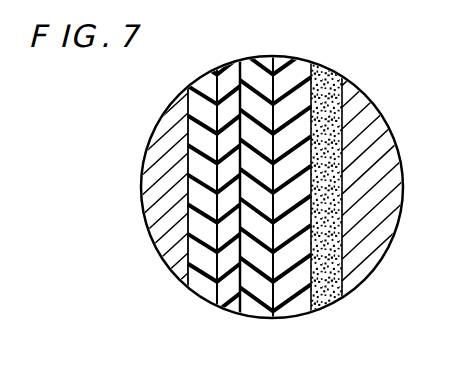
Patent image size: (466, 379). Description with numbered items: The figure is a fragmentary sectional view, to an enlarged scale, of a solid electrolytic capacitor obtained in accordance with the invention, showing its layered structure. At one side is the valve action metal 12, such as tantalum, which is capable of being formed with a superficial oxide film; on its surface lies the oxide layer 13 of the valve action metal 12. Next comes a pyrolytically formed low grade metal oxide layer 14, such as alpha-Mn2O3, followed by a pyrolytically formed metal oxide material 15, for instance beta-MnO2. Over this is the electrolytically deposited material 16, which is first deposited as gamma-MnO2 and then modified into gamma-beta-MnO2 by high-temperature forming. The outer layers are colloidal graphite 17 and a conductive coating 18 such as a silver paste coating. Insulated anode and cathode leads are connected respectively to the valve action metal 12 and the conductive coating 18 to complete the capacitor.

The valve action metal 12 is at (108, 189).
The oxide layer 13 is at (188, 184).
The pyrolytically formed low grade metal oxide layer 14 is at (207, 197).
The pyrolytically formed metal oxide material 15 is at (274, 188).
The electrolytically deposited material 16 is at (293, 206).
The colloidal graphite 17 is at (336, 206).
The conductive coating 18 is at (377, 173).